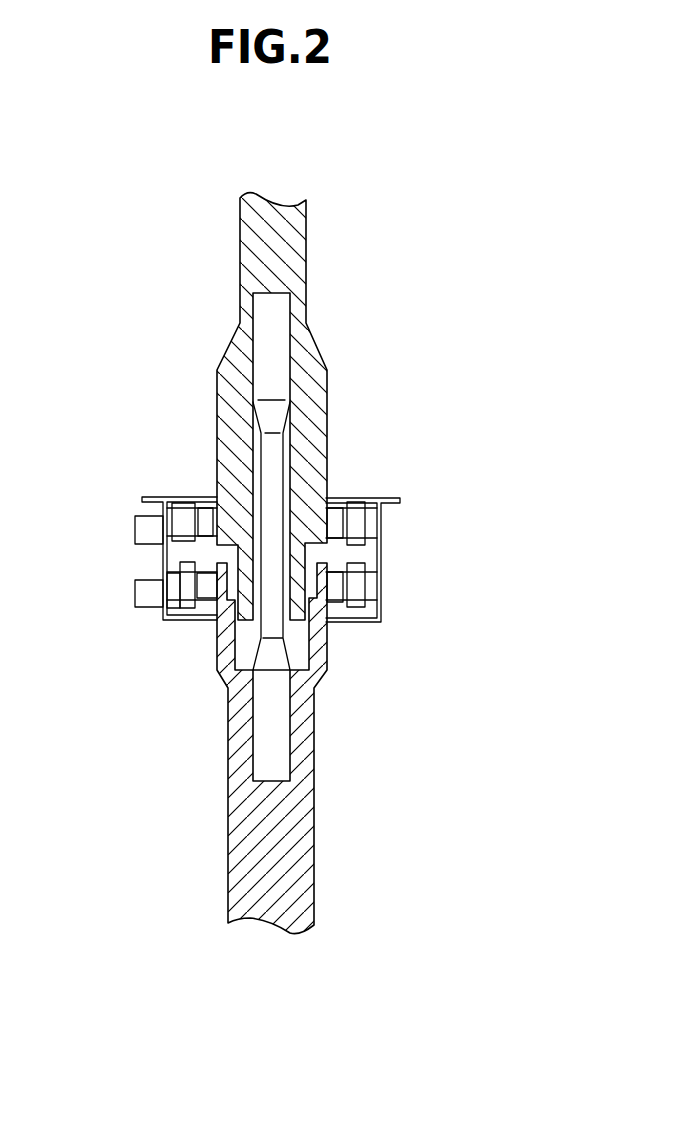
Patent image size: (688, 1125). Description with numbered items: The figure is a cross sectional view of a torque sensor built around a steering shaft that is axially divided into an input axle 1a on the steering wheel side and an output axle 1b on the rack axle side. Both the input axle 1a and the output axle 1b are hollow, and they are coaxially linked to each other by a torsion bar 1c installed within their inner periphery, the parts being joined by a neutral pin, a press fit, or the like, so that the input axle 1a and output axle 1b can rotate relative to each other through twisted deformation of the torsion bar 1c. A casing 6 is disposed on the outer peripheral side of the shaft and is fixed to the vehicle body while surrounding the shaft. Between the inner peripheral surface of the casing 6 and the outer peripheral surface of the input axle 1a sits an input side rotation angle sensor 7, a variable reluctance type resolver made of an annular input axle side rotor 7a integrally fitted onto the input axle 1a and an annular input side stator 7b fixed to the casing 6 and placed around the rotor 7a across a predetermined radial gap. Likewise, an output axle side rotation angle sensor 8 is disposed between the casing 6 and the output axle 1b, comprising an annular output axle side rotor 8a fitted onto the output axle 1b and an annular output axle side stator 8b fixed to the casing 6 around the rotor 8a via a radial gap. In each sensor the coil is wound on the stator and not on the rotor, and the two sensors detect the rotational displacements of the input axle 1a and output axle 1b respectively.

The input axle 1a is at (300, 250).
The output axle 1b is at (308, 838).
The torsion bar 1c is at (283, 456).
The casing 6 is at (140, 507).
The input side rotation angle sensor 7 is at (202, 397).
The input axle side rotor 7a is at (208, 515).
The input side stator 7b is at (188, 513).
The output axle side rotation angle sensor 8 is at (200, 703).
The output axle side rotor 8a is at (207, 592).
The output axle side stator 8b is at (185, 592).